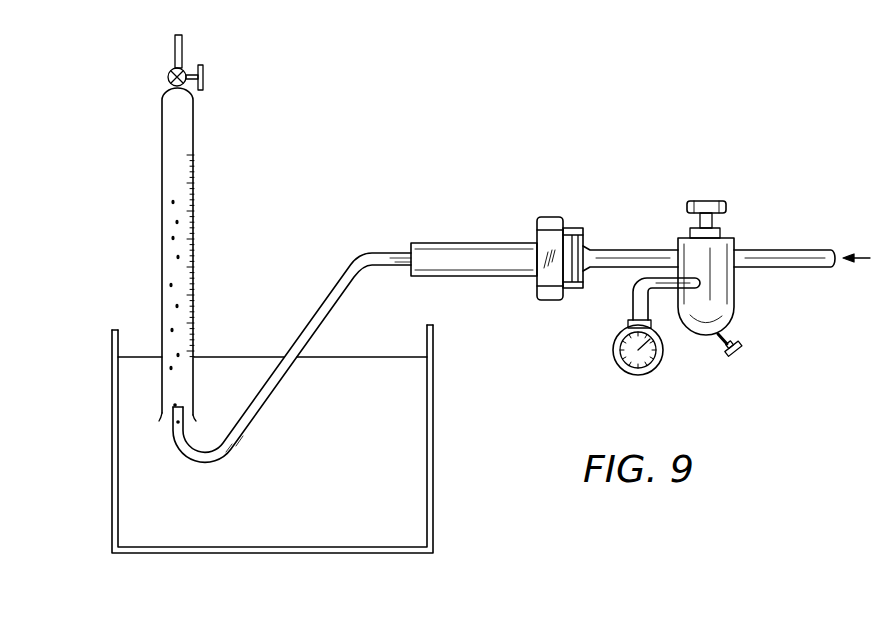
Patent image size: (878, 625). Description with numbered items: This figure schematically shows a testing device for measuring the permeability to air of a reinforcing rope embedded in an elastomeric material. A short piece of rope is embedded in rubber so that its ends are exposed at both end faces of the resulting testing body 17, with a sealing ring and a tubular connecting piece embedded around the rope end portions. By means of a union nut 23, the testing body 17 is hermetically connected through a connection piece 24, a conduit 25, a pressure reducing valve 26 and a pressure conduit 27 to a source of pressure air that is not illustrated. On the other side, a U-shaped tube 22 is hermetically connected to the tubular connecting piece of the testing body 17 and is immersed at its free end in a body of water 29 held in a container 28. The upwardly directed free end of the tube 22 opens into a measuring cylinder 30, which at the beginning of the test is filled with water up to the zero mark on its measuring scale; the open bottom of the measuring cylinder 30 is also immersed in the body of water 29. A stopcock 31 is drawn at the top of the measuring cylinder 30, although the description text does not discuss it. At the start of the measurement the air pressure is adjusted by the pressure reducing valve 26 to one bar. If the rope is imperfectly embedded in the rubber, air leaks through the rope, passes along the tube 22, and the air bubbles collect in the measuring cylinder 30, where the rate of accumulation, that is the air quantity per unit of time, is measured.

The testing body 17 is at (437, 248).
The U-shaped tube 22 is at (354, 258).
The union nut 23 is at (546, 222).
The connection piece 24 is at (572, 238).
The conduit 25 is at (613, 262).
The pressure reducing valve 26 is at (722, 252).
The pressure conduit 27 is at (810, 237).
The container 28 is at (433, 410).
The body of water 29 is at (400, 510).
The measuring cylinder 30 is at (196, 178).
The stopcock valve 31 is at (183, 70).